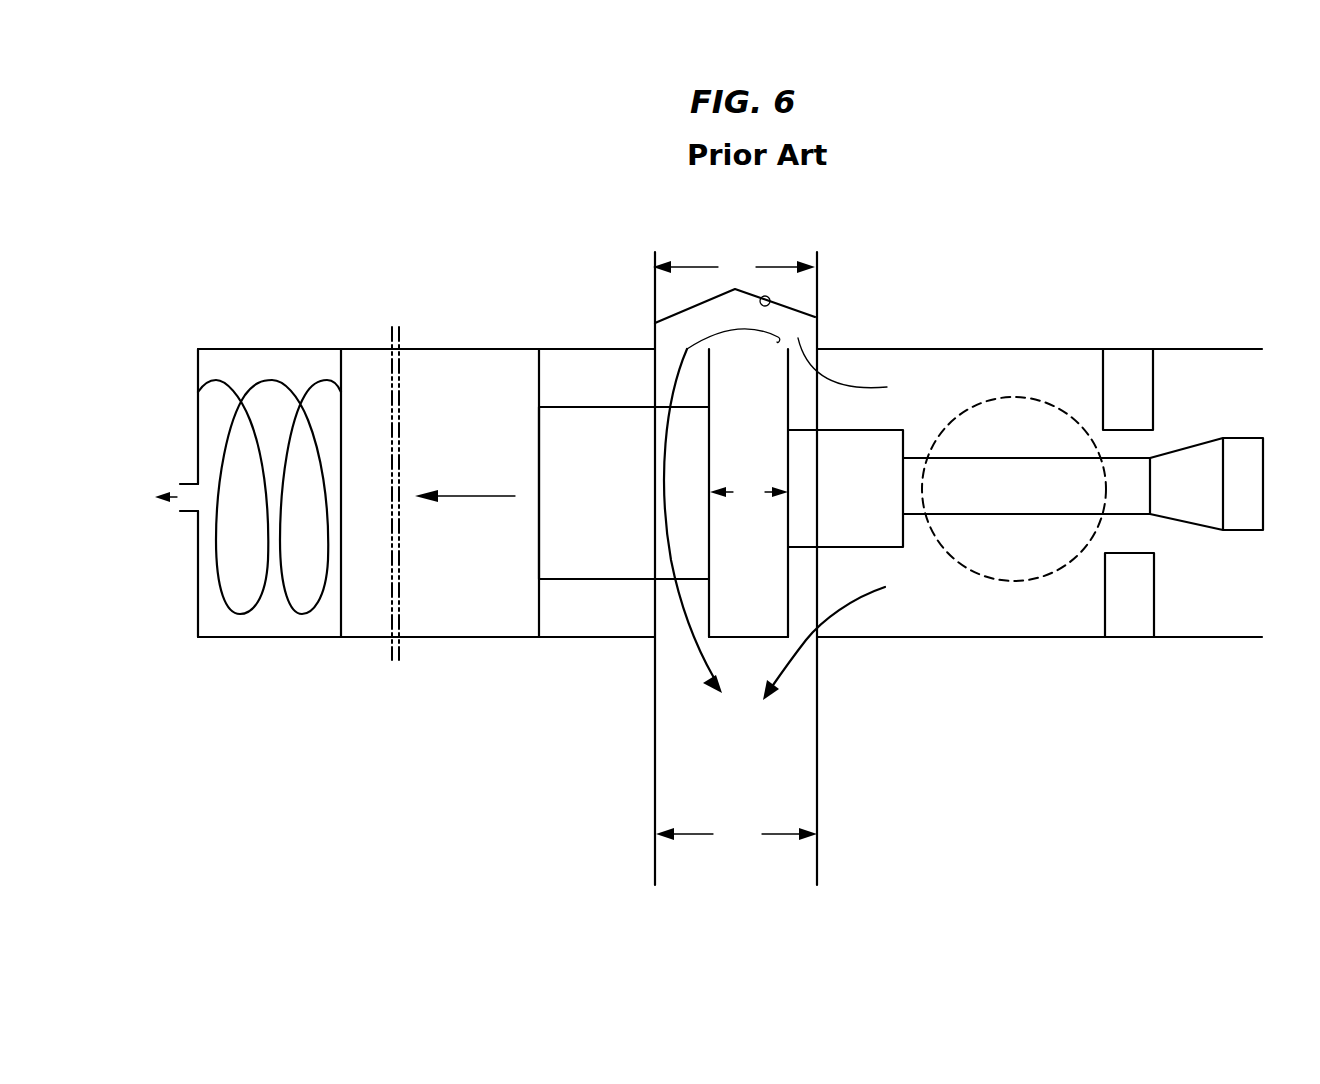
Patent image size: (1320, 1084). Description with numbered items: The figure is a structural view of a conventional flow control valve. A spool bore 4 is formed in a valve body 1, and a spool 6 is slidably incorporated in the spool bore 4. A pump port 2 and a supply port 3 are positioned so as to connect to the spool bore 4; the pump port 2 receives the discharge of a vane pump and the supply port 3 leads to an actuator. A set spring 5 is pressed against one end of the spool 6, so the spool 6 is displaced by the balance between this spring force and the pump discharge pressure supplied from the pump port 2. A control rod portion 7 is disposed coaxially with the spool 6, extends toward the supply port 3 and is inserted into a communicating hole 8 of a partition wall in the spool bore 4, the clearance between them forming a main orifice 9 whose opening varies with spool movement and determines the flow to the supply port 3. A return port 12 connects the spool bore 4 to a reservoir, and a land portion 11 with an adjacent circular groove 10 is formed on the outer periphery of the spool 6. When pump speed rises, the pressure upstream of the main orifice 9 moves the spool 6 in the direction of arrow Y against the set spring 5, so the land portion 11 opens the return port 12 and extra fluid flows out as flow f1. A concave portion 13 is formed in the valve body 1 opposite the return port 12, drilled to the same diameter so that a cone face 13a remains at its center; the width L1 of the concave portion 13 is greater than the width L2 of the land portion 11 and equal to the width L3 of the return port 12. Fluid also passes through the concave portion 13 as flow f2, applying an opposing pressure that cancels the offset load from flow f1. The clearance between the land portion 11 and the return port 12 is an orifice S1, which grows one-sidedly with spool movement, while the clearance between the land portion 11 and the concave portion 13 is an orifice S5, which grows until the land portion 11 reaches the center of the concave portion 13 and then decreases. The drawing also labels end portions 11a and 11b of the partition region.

The valve body 1 is at (847, 828).
The pump port 2 is at (1036, 586).
The supply port 3 is at (1202, 383).
The spool bore 4 is at (464, 634).
The set spring 5 is at (283, 380).
The spool 6 is at (467, 405).
The control rod portion 7 is at (1128, 477).
The communicating hole 8 is at (1123, 548).
The main orifice 9 is at (1152, 538).
The circular groove 10 is at (540, 613).
The land portion 11 is at (745, 623).
The upper end of partition wall 11a is at (798, 338).
The curved guide portion 11b is at (688, 347).
The return port 12 is at (672, 791).
The concave portion 13 is at (707, 307).
The cone face 13a is at (770, 296).
The orifice S1 is at (800, 626).
The orifice S5 is at (780, 333).
The flow f1 is at (787, 667).
The flow f2 is at (695, 648).
The width of the concave portion L1 is at (734, 269).
The width of the land portion L2 is at (749, 493).
The width of the return port L3 is at (736, 835).
The arrow Y is at (465, 481).